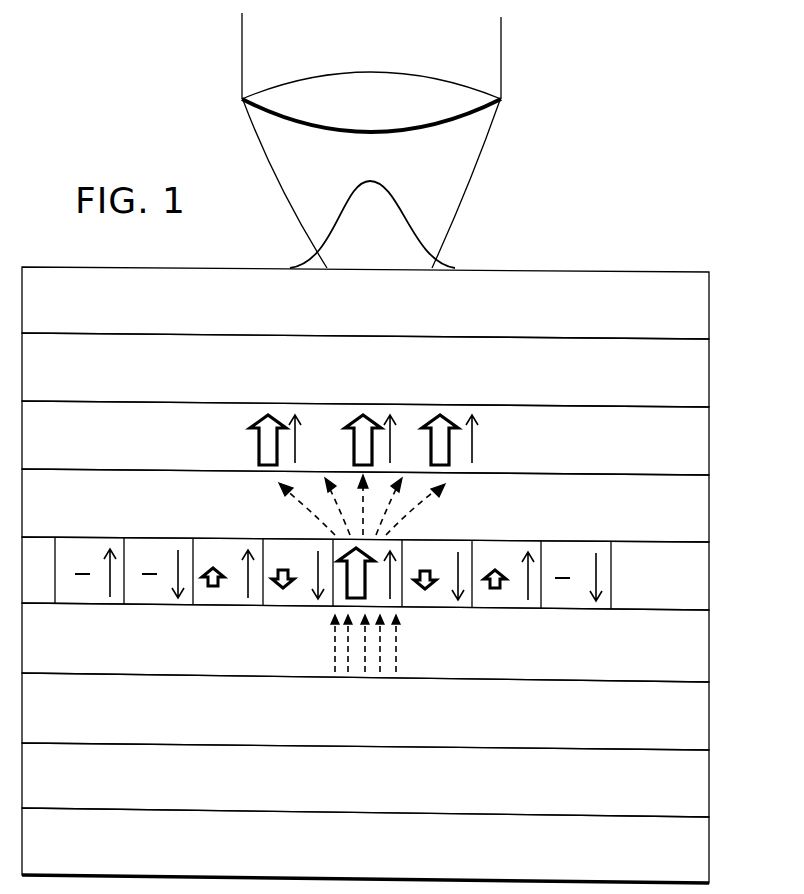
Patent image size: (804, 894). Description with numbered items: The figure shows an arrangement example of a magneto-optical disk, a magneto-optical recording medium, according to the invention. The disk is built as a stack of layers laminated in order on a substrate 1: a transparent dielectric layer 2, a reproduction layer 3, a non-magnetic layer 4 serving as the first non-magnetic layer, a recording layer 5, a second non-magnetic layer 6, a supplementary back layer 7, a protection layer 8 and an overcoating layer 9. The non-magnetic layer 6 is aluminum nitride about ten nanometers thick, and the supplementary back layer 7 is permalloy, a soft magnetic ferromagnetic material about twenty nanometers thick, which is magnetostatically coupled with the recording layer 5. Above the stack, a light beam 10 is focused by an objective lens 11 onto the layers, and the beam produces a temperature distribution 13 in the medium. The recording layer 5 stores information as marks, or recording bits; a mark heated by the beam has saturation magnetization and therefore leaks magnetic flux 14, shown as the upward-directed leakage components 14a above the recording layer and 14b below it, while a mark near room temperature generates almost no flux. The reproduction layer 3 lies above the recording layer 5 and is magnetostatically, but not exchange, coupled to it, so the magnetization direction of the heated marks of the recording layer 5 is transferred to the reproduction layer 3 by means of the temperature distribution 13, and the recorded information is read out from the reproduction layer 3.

The substrate 1 is at (700, 315).
The transparent dielectric layer 2 is at (697, 377).
The reproduction layer 3 is at (697, 439).
The non-magnetic layer (first non-magnetic layer) 4 is at (690, 516).
The recording layer 5 is at (690, 582).
The non-magnetic layer (second non-magnetic layer) 6 is at (690, 652).
The supplementary back layer 7 is at (690, 720).
The protection layer 8 is at (698, 789).
The overcoating layer 9 is at (690, 850).
The light beam 10 is at (501, 42).
The objective lens 11 is at (458, 103).
The temperature distribution 13 is at (398, 218).
The magnetic flux 14 is at (262, 630).
The magnetic flux 14a is at (268, 477).
The magnetic flux 14b is at (319, 615).